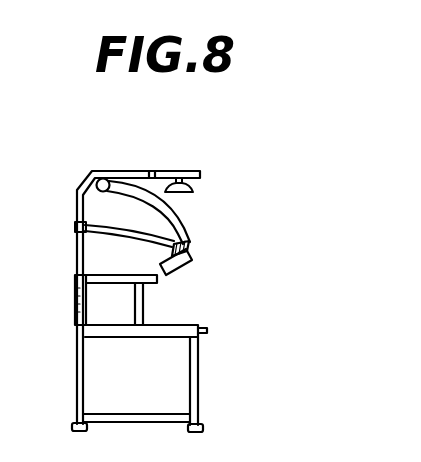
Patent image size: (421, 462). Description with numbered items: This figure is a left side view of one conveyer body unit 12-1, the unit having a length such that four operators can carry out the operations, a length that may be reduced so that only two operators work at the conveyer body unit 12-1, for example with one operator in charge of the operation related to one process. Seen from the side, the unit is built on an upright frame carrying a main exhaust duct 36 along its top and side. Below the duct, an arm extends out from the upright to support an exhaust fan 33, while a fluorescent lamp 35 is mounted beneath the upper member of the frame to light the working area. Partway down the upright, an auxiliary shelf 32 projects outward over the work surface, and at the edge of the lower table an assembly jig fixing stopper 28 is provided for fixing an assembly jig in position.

The conveyer body unit 12-1 is at (197, 141).
The assembly jig fixing stopper 28 is at (202, 324).
The auxiliary shelf 32 is at (100, 270).
The exhaust fan 33 is at (190, 258).
The fluorescent lamp 35 is at (200, 180).
The main exhaust duct 36 is at (103, 172).